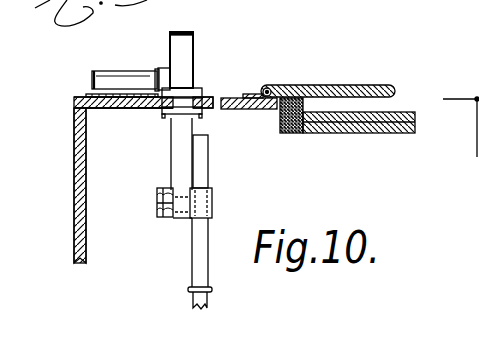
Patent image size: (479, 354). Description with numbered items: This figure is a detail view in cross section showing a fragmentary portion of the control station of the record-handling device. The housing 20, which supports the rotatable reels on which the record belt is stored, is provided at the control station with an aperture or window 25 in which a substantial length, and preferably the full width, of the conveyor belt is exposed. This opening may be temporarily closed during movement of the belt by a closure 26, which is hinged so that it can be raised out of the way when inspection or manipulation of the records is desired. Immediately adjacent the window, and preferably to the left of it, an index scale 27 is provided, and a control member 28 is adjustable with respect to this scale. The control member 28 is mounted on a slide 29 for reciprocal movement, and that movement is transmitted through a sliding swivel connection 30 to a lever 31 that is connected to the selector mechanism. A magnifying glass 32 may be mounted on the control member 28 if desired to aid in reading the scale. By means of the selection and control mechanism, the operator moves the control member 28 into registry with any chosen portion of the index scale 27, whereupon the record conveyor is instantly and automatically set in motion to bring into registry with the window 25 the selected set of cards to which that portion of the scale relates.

The housing 20 is at (74, 170).
The aperture or window 25 is at (277, 99).
The closure 26 is at (347, 88).
The index scale 27 is at (88, 97).
The control member 28 is at (180, 46).
The slide 29 is at (195, 94).
The sliding swivel connection 30 is at (212, 216).
The lever 31 is at (198, 268).
The magnifying glass 32 is at (110, 78).